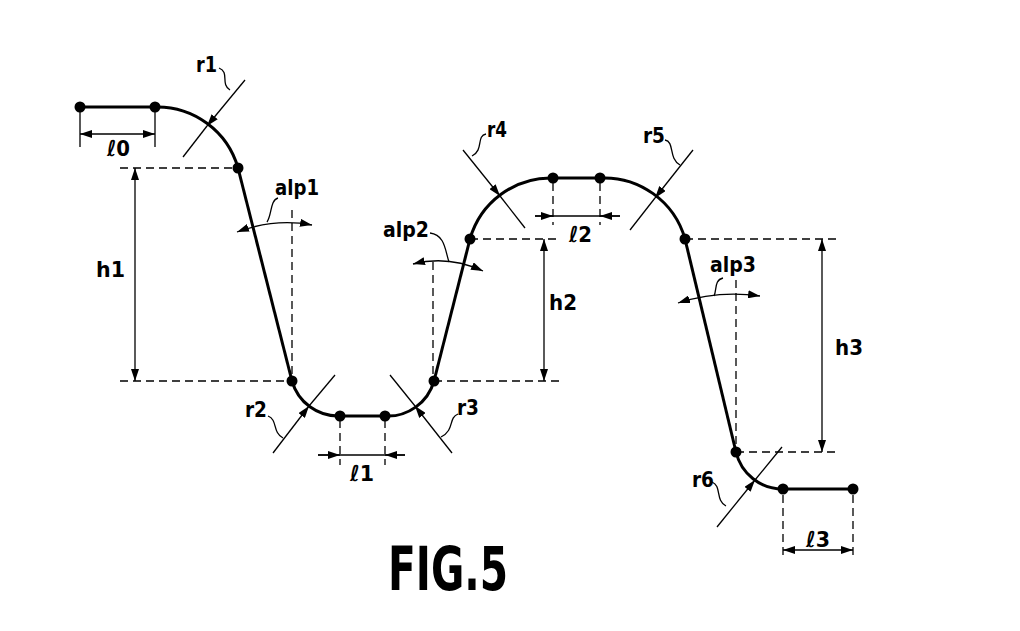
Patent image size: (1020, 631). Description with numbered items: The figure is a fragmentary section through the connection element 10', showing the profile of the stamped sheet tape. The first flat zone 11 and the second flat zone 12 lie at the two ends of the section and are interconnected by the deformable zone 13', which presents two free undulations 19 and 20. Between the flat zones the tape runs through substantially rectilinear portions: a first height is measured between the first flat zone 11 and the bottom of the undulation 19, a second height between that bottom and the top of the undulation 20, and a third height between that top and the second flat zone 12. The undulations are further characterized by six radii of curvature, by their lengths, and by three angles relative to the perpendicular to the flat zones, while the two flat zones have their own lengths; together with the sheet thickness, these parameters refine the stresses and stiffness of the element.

The connection element 10' is at (481, 249).
The first flat zone 11 is at (113, 98).
The second flat zone 12 is at (831, 484).
The deformable zone 13' is at (297, 274).
The undulation 19 is at (360, 406).
The undulation 20 is at (578, 168).